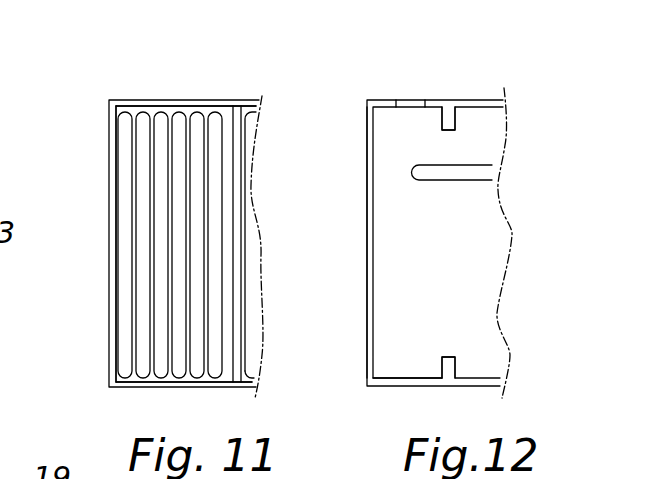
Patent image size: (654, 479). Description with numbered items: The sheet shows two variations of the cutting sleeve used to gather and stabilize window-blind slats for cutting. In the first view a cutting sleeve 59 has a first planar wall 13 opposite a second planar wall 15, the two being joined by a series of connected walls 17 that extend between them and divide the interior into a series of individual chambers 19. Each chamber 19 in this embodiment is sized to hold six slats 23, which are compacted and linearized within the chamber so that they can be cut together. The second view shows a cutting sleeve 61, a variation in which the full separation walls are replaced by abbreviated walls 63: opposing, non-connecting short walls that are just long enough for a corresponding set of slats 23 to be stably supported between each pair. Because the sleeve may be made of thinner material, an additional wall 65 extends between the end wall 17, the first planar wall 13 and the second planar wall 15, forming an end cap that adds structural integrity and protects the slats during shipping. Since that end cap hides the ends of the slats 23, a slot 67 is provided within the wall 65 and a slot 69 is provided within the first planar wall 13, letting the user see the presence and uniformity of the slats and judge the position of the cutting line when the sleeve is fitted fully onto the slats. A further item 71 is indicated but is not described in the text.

In FIG. 11, the first planar wall 13 is at (118, 100).
In FIG. 12, the first planar wall 13 is at (493, 100).
In FIG. 11, the second planar wall 15 is at (138, 387).
In FIG. 12, the second planar wall 15 is at (400, 387).
In FIG. 11, the walls 17 is at (112, 252).
In FIG. 12, the walls 17 is at (367, 173).
In FIG. 11, the chambers 19 is at (173, 110).
In FIG. 11, the slats 23 is at (162, 182).
In FIG. 11, the cutting sleeve 59 is at (96, 192).
In FIG. 12, the cutting sleeve 61 is at (374, 79).
In FIG. 12, the abbreviated walls 63 is at (456, 113).
In FIG. 12, the wall 65 is at (457, 258).
In FIG. 12, the slot 67 is at (487, 170).
In FIG. 12, the slot 69 is at (407, 100).
In FIG. 12, the assembly 71 is at (308, 478).